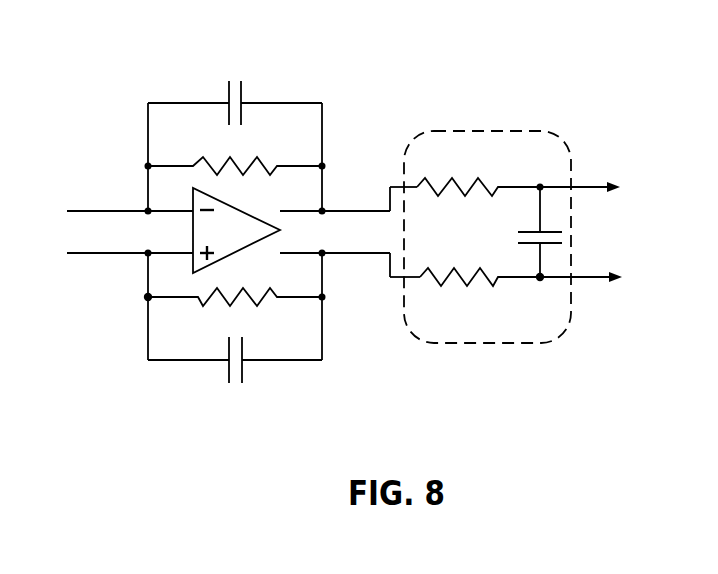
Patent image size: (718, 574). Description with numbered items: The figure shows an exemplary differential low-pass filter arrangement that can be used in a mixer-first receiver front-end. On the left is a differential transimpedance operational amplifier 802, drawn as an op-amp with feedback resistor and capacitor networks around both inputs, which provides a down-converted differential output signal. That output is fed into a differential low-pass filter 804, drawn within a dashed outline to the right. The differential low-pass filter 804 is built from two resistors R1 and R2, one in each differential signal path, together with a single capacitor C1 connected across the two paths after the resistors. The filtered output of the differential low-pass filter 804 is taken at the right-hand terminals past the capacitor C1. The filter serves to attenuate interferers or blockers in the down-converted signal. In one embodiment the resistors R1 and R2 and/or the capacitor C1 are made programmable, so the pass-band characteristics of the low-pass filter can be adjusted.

The differential transimpedance operational amplifier 802 is at (243, 245).
The differential low-pass filter 804 is at (554, 202).
The resistor R1 is at (512, 175).
The resistor R2 is at (515, 265).
The capacitor C1 is at (523, 232).